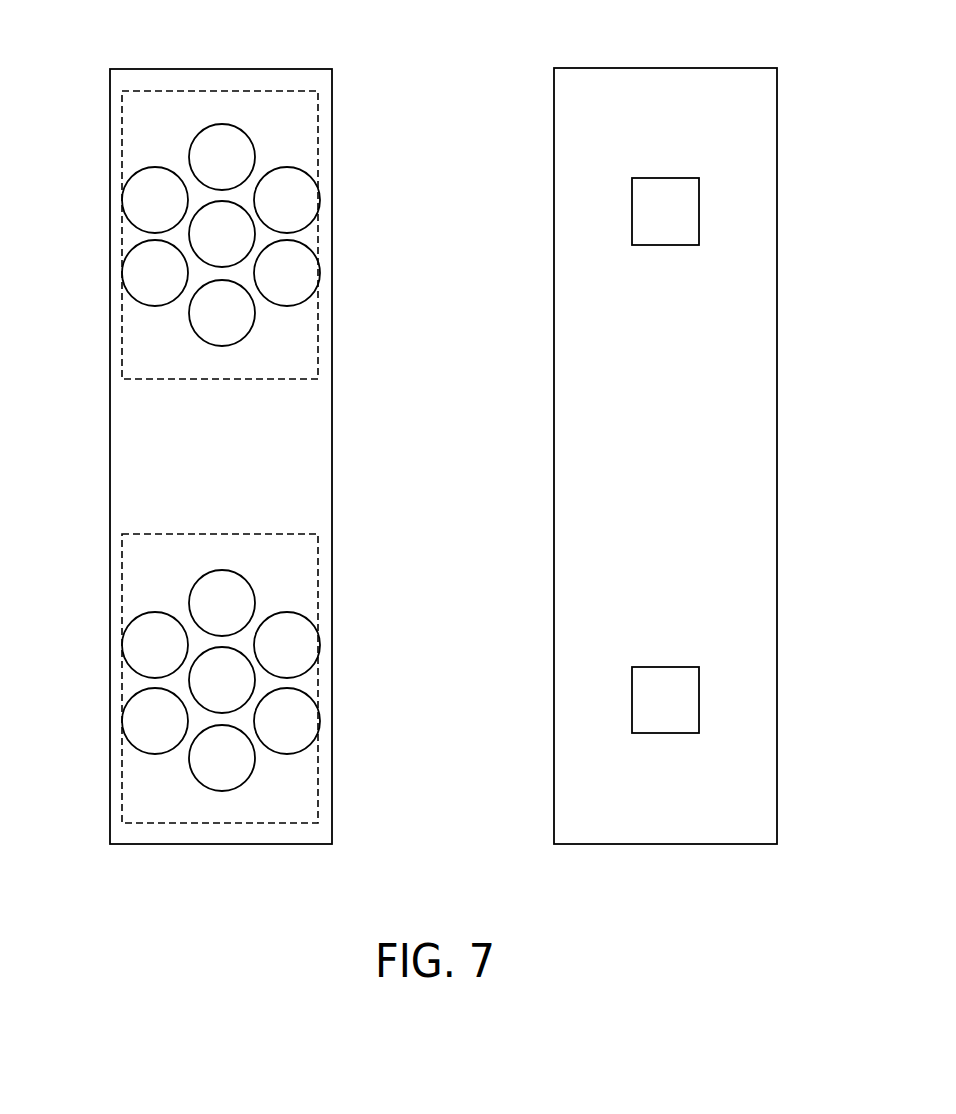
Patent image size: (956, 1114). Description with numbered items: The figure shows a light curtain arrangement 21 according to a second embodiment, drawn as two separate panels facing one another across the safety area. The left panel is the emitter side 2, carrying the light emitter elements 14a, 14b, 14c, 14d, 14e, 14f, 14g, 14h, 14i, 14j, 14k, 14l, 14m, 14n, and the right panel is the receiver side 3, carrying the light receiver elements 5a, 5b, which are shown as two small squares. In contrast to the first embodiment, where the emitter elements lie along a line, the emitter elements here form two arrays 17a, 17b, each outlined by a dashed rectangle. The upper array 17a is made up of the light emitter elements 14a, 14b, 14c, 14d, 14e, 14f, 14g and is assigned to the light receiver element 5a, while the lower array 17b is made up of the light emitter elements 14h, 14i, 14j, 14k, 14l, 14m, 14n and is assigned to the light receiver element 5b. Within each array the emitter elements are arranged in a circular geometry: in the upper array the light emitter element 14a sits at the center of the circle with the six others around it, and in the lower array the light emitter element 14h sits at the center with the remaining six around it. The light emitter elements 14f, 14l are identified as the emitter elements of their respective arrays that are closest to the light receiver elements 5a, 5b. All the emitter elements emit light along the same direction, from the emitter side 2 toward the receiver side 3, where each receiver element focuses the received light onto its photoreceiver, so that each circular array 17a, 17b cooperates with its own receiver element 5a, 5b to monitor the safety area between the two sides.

The emitter side 2 is at (230, 470).
The receiver side 3 is at (695, 498).
The light receiver element 5a is at (677, 209).
The light receiver element 5b is at (677, 694).
The light emitter element 14a is at (224, 223).
The light emitter element 14b is at (142, 193).
The light emitter element 14c is at (143, 271).
The light emitter element 14d is at (227, 317).
The light emitter element 14e is at (237, 146).
The light emitter element 14f is at (305, 191).
The light emitter element 14g is at (304, 271).
The light emitter element 14h is at (219, 662).
The light emitter element 14i is at (138, 642).
The light emitter element 14j is at (145, 722).
The light emitter element 14k is at (222, 770).
The light emitter element 14l is at (299, 717).
The light emitter element 14m is at (325, 666).
The light emitter element 14n is at (237, 597).
The array 17a is at (236, 226).
The array 17b is at (230, 637).
The light curtain arrangement 21 is at (715, 479).